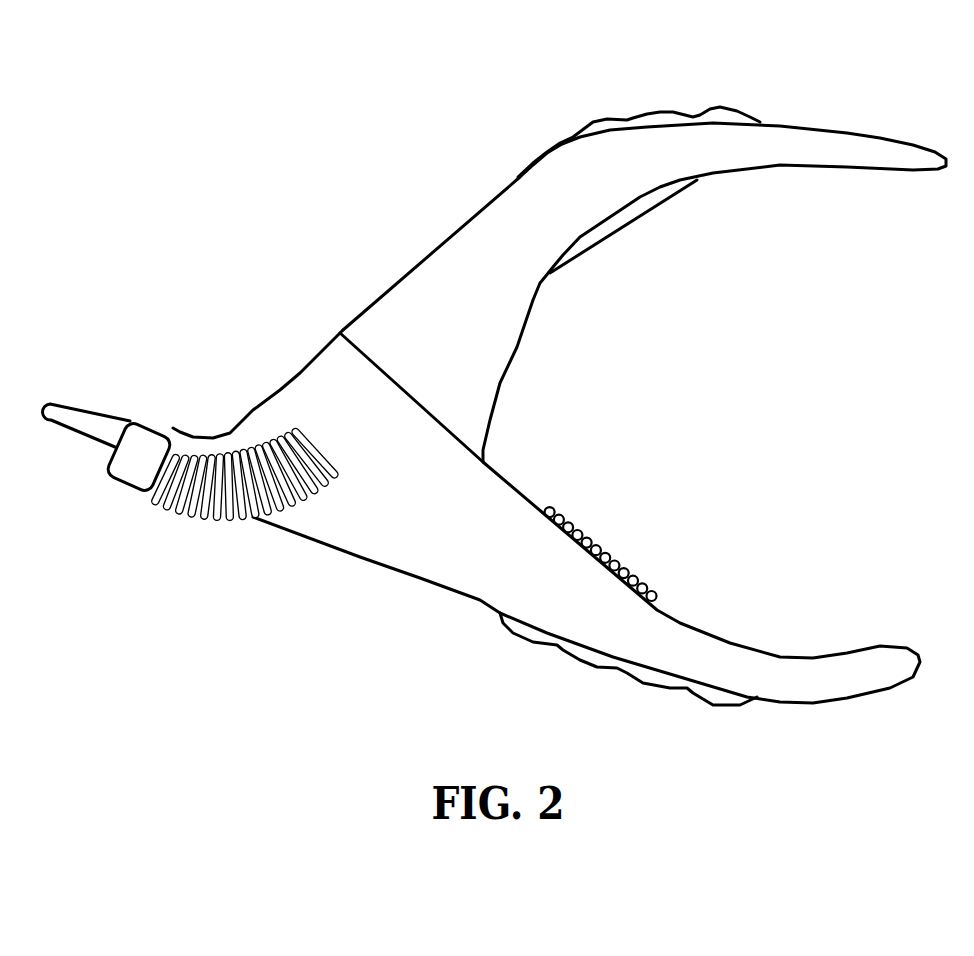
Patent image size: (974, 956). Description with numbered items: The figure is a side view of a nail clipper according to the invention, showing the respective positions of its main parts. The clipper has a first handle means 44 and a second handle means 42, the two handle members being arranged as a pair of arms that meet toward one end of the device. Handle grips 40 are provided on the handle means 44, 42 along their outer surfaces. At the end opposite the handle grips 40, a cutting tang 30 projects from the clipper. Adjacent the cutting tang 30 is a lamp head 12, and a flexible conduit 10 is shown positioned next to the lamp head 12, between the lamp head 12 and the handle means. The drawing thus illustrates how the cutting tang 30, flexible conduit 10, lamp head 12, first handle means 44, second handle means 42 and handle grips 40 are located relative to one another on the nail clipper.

The flexible conduit 10 is at (217, 517).
The lamp head 12 is at (130, 475).
The cutting tang 30 is at (78, 423).
The handle grips 40 is at (597, 120).
The second handle means 42 is at (852, 670).
The first handle means 44 is at (810, 150).